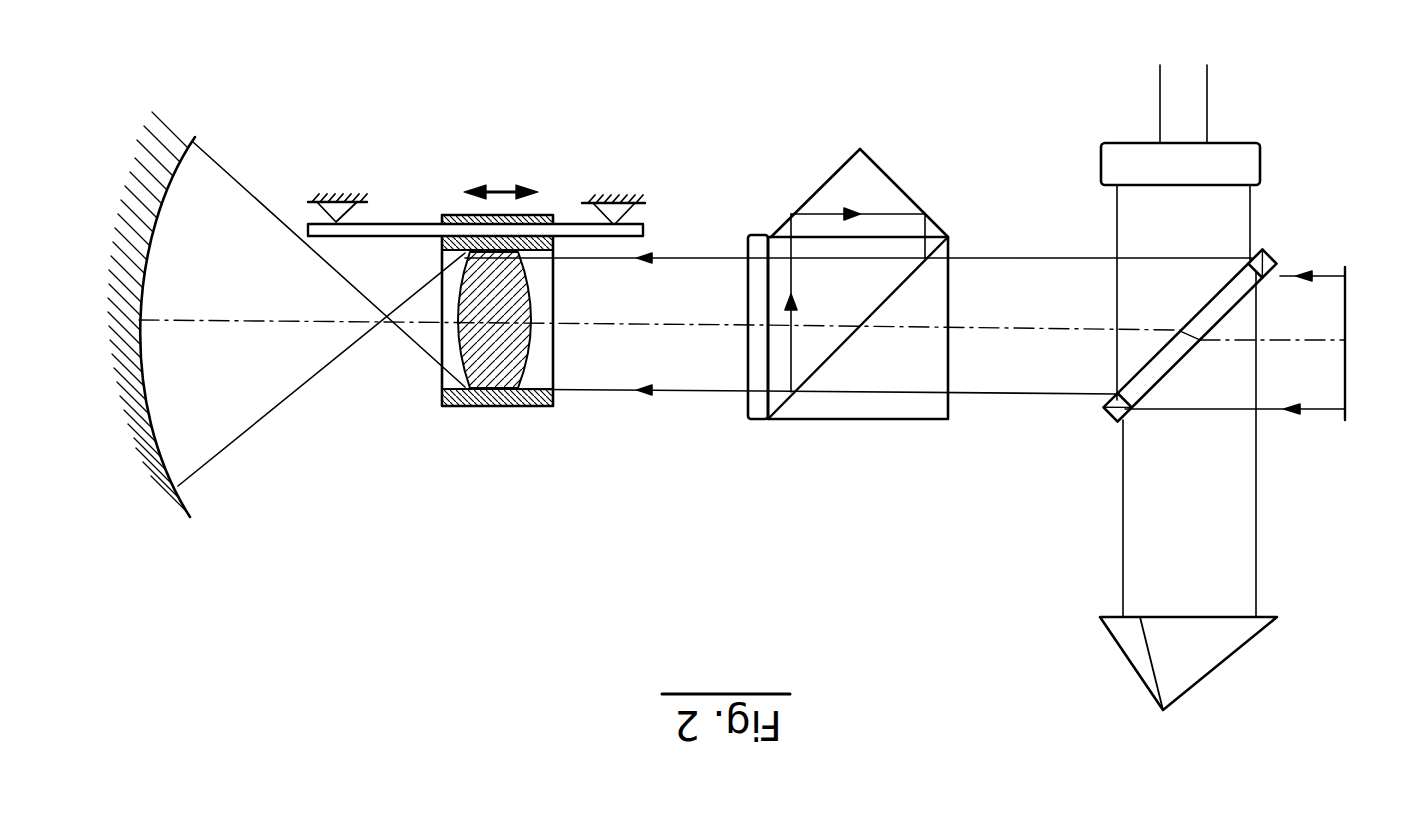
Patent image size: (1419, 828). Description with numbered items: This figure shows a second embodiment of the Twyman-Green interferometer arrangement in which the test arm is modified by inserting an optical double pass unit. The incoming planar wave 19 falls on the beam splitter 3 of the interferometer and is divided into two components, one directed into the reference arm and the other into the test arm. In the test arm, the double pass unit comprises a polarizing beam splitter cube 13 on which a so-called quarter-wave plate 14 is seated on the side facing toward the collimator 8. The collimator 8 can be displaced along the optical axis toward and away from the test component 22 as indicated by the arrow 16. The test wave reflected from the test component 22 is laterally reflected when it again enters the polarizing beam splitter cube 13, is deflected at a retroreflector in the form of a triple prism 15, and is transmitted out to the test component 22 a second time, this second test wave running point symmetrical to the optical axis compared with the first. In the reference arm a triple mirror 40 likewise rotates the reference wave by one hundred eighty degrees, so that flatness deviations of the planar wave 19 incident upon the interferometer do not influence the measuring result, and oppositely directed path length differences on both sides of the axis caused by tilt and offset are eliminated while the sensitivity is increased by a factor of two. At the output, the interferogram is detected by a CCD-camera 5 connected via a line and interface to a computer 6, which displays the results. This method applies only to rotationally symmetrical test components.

The beam splitter 3 is at (1110, 412).
The CCD-camera 5 is at (1127, 153).
The computer 6 is at (390, 230).
The collimator 8 is at (490, 372).
The polarizing beam splitter cube 13 is at (845, 420).
The λ/4-plate 14 is at (758, 400).
The triple prism 15 is at (840, 188).
The arrow 16 is at (494, 185).
The planar wave 19 is at (1346, 398).
The test component 22 is at (192, 480).
The triple mirror 40 is at (1103, 617).